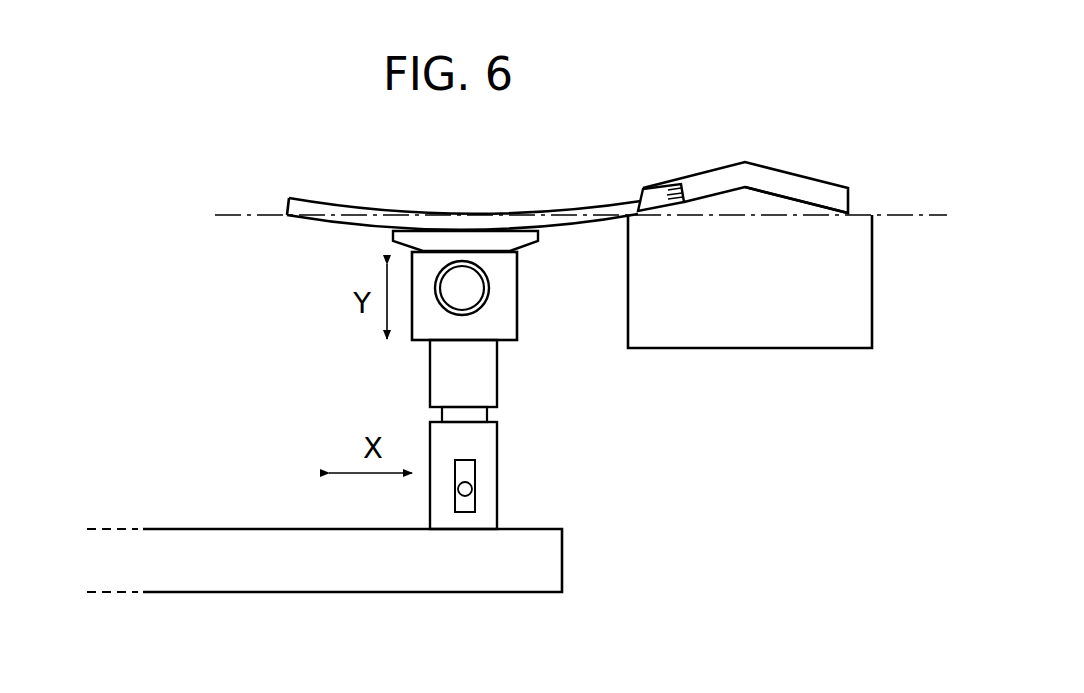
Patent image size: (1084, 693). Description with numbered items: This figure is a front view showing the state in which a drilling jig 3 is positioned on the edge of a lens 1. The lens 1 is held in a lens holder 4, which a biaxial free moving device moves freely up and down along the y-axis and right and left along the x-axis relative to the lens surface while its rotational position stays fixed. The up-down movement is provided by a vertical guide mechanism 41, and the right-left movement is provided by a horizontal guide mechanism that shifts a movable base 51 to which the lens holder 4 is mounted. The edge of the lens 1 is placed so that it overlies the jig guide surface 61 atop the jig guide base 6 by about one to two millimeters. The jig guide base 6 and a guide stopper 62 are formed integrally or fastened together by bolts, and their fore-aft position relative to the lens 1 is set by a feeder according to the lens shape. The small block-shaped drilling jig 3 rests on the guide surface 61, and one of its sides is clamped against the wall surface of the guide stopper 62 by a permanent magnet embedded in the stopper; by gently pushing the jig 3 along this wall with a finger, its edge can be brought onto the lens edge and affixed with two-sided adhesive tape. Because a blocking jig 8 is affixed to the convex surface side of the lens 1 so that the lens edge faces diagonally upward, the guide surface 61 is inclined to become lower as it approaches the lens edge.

The lens 1 is at (307, 198).
The drilling jig 3 is at (657, 187).
The lens holder 4 is at (529, 306).
The jig guide base 6 is at (880, 278).
The blocking jig 8 is at (394, 249).
The vertical guide mechanism 41 is at (477, 475).
The movable base 51 is at (552, 562).
The jig guide surface 61 is at (722, 194).
The guide stopper 62 is at (745, 163).